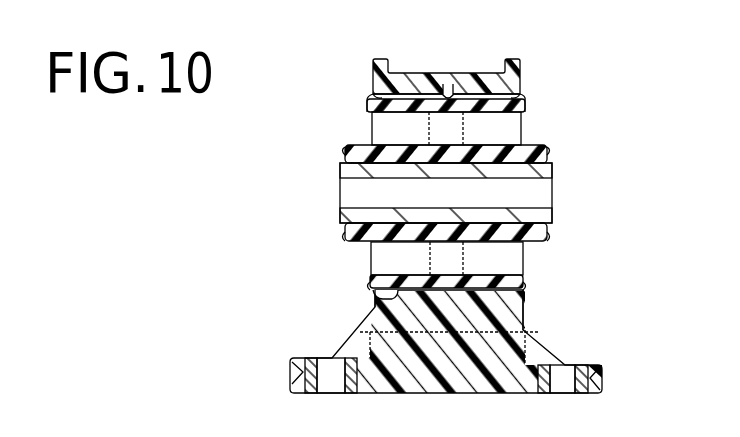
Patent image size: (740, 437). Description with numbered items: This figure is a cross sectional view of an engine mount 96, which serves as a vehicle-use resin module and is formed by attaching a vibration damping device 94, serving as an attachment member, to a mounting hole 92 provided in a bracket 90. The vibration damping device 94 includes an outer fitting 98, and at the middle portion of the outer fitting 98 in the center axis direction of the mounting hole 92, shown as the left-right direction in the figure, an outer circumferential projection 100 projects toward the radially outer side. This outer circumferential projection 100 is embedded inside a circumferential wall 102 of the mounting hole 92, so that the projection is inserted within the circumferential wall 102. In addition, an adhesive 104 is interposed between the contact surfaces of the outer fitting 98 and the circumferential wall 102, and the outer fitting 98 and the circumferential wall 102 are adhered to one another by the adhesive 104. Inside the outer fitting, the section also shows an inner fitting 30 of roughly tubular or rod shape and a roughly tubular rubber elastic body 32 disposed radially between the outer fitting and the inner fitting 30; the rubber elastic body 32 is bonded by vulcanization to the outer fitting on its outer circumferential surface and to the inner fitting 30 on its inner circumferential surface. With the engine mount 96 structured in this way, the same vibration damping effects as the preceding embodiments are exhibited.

The inner fitting 30 is at (537, 173).
The rubber elastic body 32 is at (370, 232).
The bracket 90 is at (411, 63).
The mounting hole 92 is at (487, 100).
The vibration damping device 94 is at (347, 148).
The engine mount 96 is at (577, 73).
The outer fitting 98 is at (487, 278).
The outer circumferential projection 100 is at (458, 64).
The circumferential wall 102 is at (420, 88).
The adhesive 104 is at (396, 289).